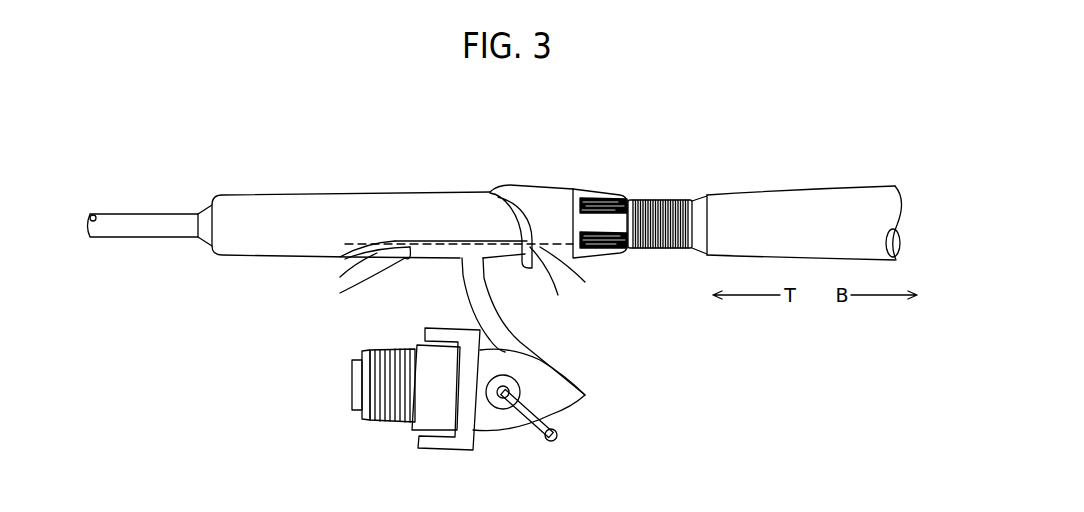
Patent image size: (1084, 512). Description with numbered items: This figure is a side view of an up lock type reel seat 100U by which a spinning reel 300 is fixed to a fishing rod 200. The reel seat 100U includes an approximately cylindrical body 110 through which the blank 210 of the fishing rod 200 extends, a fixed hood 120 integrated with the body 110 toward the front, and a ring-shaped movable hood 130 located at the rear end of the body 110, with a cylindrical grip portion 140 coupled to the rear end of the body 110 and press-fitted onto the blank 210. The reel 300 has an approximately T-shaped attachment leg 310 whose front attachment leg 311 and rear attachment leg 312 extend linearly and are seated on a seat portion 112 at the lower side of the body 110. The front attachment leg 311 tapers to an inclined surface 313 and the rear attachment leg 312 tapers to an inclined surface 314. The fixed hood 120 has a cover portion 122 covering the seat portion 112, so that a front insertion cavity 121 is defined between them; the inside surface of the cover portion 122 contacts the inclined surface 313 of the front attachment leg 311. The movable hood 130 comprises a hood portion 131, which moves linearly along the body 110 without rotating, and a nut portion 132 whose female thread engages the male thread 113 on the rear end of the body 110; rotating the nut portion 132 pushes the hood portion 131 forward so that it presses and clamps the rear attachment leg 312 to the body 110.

The reel seat 100U is at (368, 180).
The body 110 is at (263, 200).
The seat portion 112 is at (474, 240).
The male thread 113 is at (662, 202).
The fixed hood 120 is at (433, 234).
The front insertion cavity 121 is at (412, 250).
The cover portion 122 is at (412, 262).
The movable hood 130 is at (558, 184).
The hood portion 131 is at (535, 192).
The nut portion 132 is at (606, 224).
The grip portion 140 is at (798, 202).
The fishing rod 200 is at (147, 263).
The blank 210 is at (165, 228).
The spinning reel 300 is at (580, 372).
The attachment leg 310 is at (492, 270).
The front attachment leg 311 is at (340, 293).
The rear attachment leg 312 is at (560, 298).
The inclined surface 313 is at (337, 280).
The inclined surface 314 is at (590, 284).